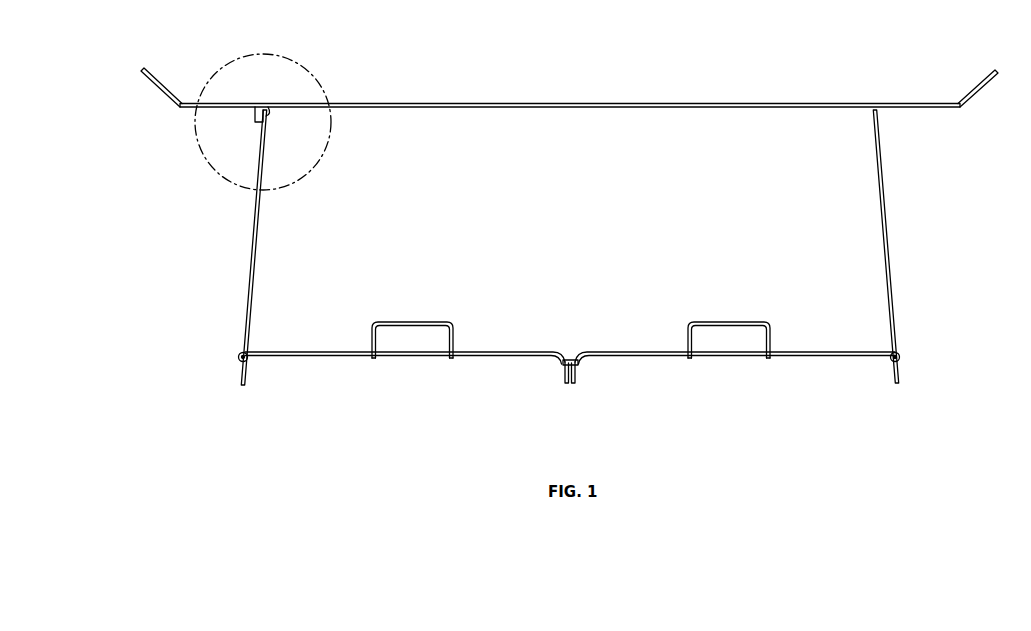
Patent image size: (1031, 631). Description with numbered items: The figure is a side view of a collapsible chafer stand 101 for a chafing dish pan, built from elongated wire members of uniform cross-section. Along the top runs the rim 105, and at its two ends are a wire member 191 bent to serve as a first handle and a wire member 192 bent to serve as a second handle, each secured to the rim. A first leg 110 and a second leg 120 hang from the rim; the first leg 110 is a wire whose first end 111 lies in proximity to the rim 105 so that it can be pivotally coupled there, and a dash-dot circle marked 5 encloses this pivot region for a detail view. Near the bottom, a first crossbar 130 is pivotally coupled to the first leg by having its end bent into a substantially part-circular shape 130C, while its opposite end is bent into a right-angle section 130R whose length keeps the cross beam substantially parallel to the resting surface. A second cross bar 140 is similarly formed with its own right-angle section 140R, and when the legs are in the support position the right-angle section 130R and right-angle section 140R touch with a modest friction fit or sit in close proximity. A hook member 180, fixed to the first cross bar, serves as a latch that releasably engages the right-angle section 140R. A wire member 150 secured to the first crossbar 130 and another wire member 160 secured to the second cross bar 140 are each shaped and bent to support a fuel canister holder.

The detail area of FIG. 5 is at (297, 60).
The chafer stand 101 is at (727, 423).
The rim 105 is at (633, 102).
The first leg 110 is at (252, 235).
The first end 111 is at (255, 108).
The second leg 120 is at (888, 240).
The first crossbar 130 is at (298, 358).
The part-circular shape 130C is at (238, 360).
The right-angle section 130R is at (565, 376).
The second cross bar 140 is at (817, 358).
The right-angle section 140R is at (574, 376).
The wire member 150 is at (395, 328).
The wire member 160 is at (713, 328).
The hook member 180 is at (578, 363).
The wire member 191 is at (155, 92).
The wire member 192 is at (977, 98).